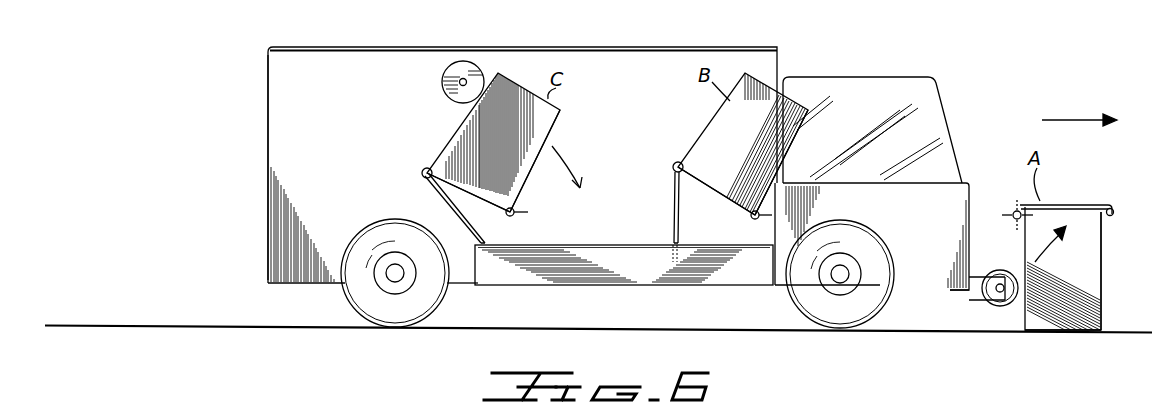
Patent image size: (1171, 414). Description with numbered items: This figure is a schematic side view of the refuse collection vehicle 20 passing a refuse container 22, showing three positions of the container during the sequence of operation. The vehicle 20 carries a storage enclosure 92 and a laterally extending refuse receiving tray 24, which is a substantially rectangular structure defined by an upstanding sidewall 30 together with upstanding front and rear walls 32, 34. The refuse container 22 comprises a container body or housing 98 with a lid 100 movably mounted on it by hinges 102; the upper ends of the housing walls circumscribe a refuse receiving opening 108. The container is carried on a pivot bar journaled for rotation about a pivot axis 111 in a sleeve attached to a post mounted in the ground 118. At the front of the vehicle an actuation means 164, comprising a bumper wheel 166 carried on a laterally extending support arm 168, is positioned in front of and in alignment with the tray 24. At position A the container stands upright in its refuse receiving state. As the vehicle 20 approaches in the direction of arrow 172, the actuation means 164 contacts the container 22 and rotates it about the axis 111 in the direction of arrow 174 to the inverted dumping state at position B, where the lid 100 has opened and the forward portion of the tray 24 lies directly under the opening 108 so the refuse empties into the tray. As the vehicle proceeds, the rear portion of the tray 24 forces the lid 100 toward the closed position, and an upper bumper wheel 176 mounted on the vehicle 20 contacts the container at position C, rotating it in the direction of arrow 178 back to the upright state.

The refuse collection vehicle 20 is at (967, 115).
The refuse container 22 is at (462, 119).
The refuse receiving receptacle or tray 24 is at (727, 290).
The upstanding sidewall 30 is at (632, 272).
The upstanding front wall 32 is at (774, 285).
The upstanding rear wall 34 is at (468, 285).
The storage enclosure 92 is at (267, 73).
The container body or housing 98 is at (564, 117).
The lid 100 is at (441, 201).
The hinges 102 is at (422, 171).
The refuse receiving opening 108 is at (496, 214).
The pivot axis 111 is at (518, 213).
The ground 118 is at (1105, 331).
The actuation means 164 is at (1010, 306).
The bumper wheel 166 is at (1002, 269).
The laterally extending support arm 168 is at (968, 293).
The arrow 172 is at (1062, 116).
The arrow 174 is at (1058, 253).
The upper bumper wheel 176 is at (442, 85).
The arrow 178 is at (579, 160).